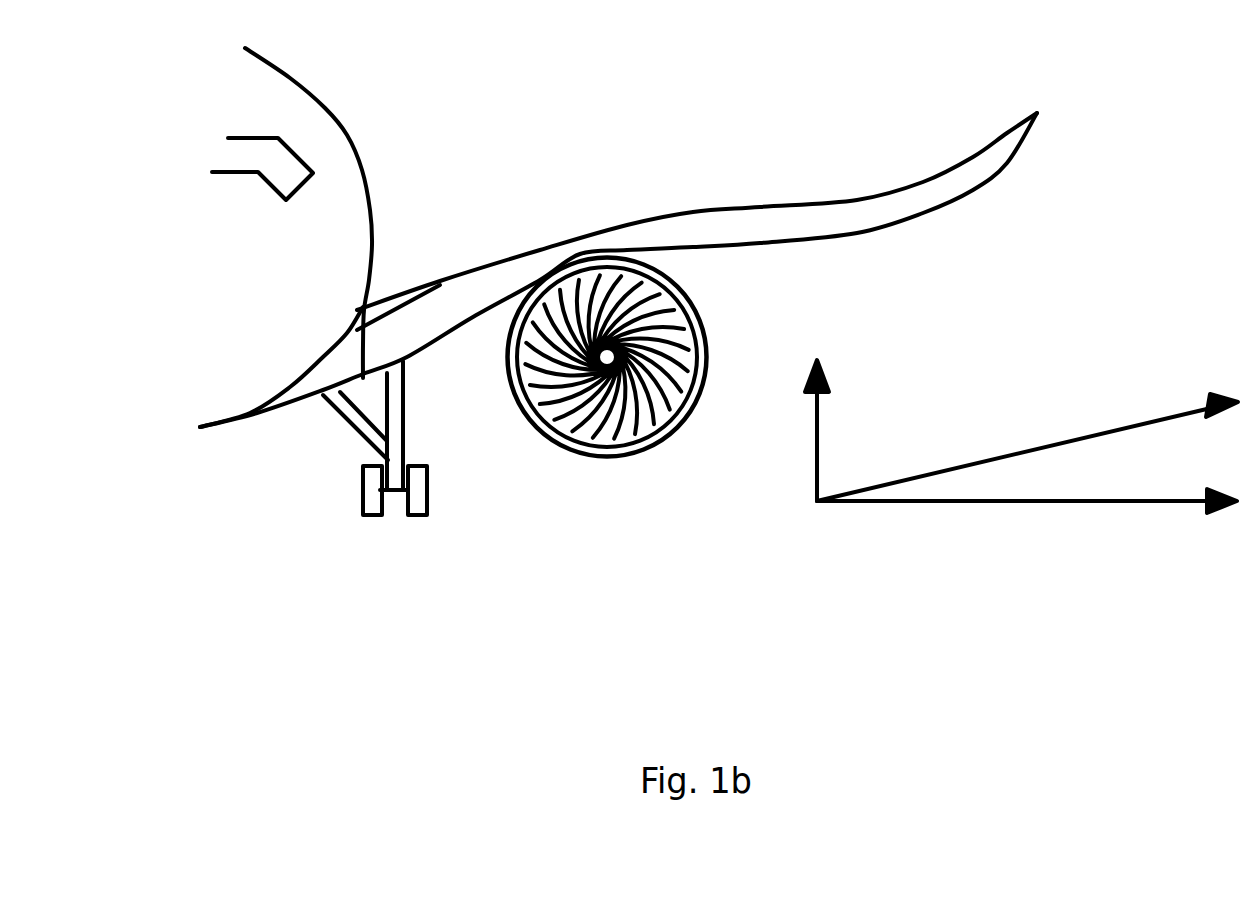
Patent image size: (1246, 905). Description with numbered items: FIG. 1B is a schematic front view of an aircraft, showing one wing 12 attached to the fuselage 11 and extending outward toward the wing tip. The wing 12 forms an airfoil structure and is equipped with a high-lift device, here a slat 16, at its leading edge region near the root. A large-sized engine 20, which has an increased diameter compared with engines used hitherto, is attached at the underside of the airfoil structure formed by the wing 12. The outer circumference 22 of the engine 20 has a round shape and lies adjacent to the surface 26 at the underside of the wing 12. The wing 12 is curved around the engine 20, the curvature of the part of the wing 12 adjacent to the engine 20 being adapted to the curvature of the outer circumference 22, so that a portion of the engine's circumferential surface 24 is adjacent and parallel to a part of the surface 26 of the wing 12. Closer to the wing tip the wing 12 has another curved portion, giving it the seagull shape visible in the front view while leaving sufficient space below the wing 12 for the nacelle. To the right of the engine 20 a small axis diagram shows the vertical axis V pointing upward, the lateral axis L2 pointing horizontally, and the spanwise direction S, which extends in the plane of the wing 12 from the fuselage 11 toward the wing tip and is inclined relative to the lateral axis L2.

The fuselage 11 is at (347, 130).
The wing 12 is at (787, 206).
The slat 16 is at (528, 262).
The engine 20 is at (557, 442).
The outer circumference 22 is at (705, 318).
The circumferential surface 24 is at (575, 259).
The surface 26 is at (673, 250).
The vertical axis V is at (812, 428).
The spanwise direction S is at (1047, 442).
The lateral axis L2 is at (990, 503).